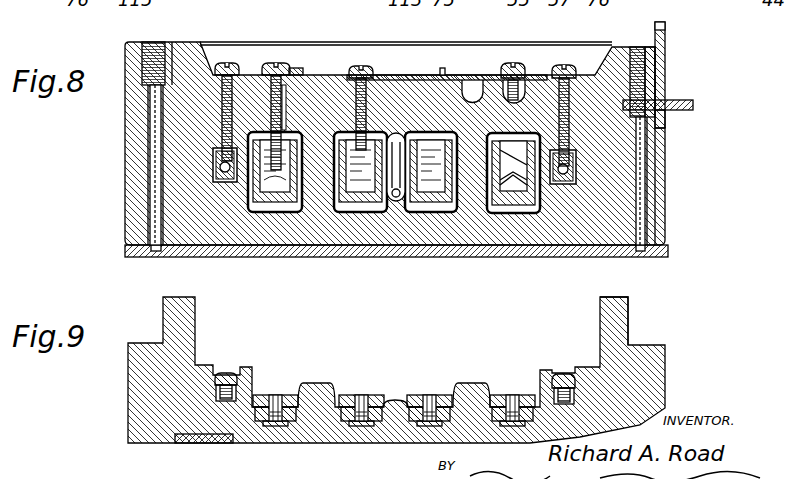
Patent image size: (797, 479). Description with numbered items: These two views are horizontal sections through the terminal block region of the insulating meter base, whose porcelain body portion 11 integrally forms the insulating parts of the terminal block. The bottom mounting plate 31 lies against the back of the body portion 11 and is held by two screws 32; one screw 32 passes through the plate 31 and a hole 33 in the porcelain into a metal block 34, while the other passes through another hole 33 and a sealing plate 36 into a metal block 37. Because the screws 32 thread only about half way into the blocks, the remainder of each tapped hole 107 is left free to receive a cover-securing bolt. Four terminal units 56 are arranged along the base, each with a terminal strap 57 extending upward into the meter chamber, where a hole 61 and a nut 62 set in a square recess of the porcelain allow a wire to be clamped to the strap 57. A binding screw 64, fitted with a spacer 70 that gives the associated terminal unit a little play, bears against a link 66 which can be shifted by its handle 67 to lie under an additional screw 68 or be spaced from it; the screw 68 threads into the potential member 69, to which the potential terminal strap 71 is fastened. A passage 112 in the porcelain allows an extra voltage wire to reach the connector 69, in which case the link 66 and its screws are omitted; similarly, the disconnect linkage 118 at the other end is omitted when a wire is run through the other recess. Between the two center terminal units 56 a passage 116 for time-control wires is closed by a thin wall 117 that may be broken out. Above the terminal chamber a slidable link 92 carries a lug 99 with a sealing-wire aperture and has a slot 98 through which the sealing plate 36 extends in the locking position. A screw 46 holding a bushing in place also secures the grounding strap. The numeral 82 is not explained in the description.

In FIG. 8, the body portion 11 is at (125, 176).
In FIG. 9, the body portion 11 is at (650, 370).
In FIG. 8, the bottom mounting plate 31 is at (218, 247).
In FIG. 8, the screw 32 is at (155, 146).
In FIG. 8, the hole 33 is at (148, 126).
In FIG. 8, the metal block 34 is at (145, 72).
In FIG. 8, the sealing plate 36 is at (694, 106).
In FIG. 8, the metal block 37 is at (650, 58).
In FIG. 9, the screw 46 is at (210, 445).
In FIG. 8, the terminal unit 56 is at (270, 215).
In FIG. 9, the terminal strap 57 is at (348, 393).
In FIG. 9, the hole 61 is at (427, 400).
In FIG. 9, the nut 62 is at (290, 421).
In FIG. 8, the screw 64 is at (294, 68).
In FIG. 8, the link 66 is at (274, 63).
In FIG. 8, the handle 67 is at (288, 98).
In FIG. 8, the screw 68 is at (223, 63).
In FIG. 8, the potential member 69 is at (218, 172).
In FIG. 8, the spacer 70 is at (286, 112).
In FIG. 9, the potential terminal strap 71 is at (236, 372).
In FIG. 9, the post 82 is at (612, 297).
In FIG. 8, the link 92 is at (667, 72).
In FIG. 8, the slot 98 is at (665, 112).
In FIG. 8, the lug 99 is at (655, 24).
In FIG. 8, the tapped hole 107 is at (157, 43).
In FIG. 8, the passage 112 is at (233, 182).
In FIG. 8, the passage 116 is at (396, 133).
In FIG. 8, the thin wall 117 is at (398, 200).
In FIG. 8, the disconnect linkage 118 is at (430, 75).